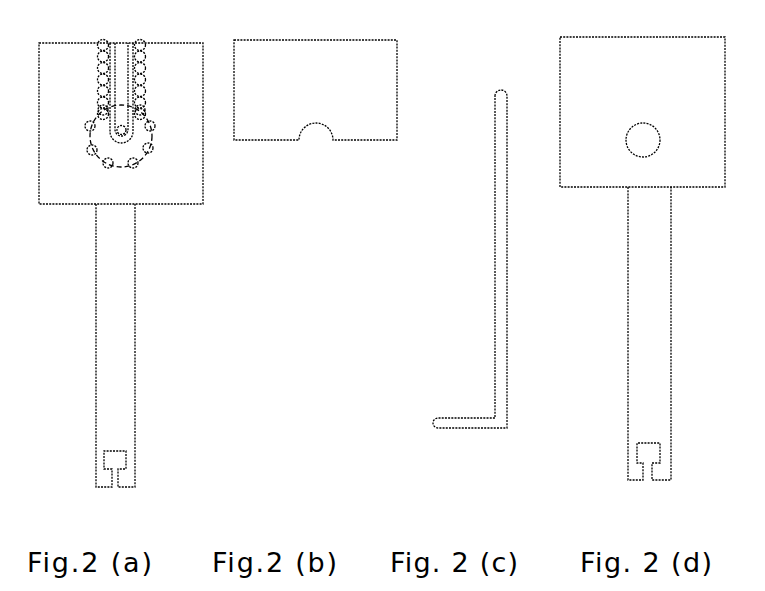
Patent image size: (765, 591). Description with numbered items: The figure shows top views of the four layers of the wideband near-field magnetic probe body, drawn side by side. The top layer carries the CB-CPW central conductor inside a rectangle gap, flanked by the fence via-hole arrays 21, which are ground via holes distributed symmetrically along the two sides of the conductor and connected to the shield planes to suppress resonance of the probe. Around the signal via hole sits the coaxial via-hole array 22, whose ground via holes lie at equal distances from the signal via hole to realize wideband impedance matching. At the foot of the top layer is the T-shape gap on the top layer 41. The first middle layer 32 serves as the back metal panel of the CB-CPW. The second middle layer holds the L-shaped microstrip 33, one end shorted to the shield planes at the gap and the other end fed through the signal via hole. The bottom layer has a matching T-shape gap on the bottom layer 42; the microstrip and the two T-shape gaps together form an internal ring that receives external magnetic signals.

The fence via-hole arrays 21 is at (103, 73).
The coaxial via-hole array 22 is at (120, 165).
The T-shape gap on the top layer 41 is at (118, 458).
The first middle layer of a magnetic probe 32 is at (286, 103).
The microstrip of a magnetic probe 33 is at (500, 258).
The T-shape gap on the bottom layer 42 is at (650, 457).